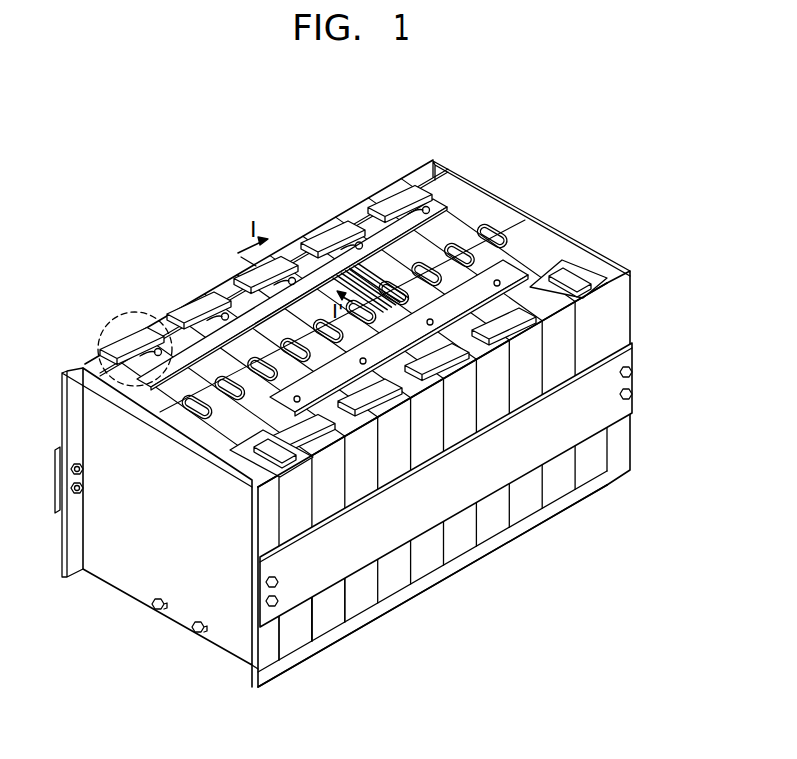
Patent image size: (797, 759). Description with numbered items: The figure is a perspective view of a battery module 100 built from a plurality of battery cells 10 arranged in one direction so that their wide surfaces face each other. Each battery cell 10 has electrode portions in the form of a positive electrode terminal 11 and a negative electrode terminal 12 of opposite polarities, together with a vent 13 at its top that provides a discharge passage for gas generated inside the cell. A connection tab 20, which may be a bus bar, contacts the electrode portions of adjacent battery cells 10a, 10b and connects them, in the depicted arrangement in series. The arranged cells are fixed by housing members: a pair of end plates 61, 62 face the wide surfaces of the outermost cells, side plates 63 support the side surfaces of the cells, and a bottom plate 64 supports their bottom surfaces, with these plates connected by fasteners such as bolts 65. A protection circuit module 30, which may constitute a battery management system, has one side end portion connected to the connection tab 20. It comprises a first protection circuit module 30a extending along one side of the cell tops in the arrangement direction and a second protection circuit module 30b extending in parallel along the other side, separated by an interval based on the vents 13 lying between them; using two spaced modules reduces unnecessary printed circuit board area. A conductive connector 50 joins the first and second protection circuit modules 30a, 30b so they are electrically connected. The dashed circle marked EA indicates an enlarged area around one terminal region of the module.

The battery module 100 is at (214, 249).
The battery cell 10 is at (330, 488).
The adjacent battery cell 10a is at (297, 644).
The adjacent battery cell 10b is at (334, 622).
The positive electrode terminal 11 is at (98, 355).
The negative electrode terminal 12 is at (168, 332).
The vent 13 is at (489, 234).
The connection tab 20 is at (399, 190).
The protection circuit module 30 is at (348, 257).
The first protection circuit module 30a is at (438, 210).
The second protection circuit module 30b is at (513, 272).
The connector 50 is at (362, 282).
The end plate 61 is at (104, 530).
The end plate 62 is at (588, 263).
The side plate 63 is at (56, 450).
The bottom plate 64 is at (433, 595).
The bolt 65 is at (636, 394).
The enlarged area EA is at (126, 312).